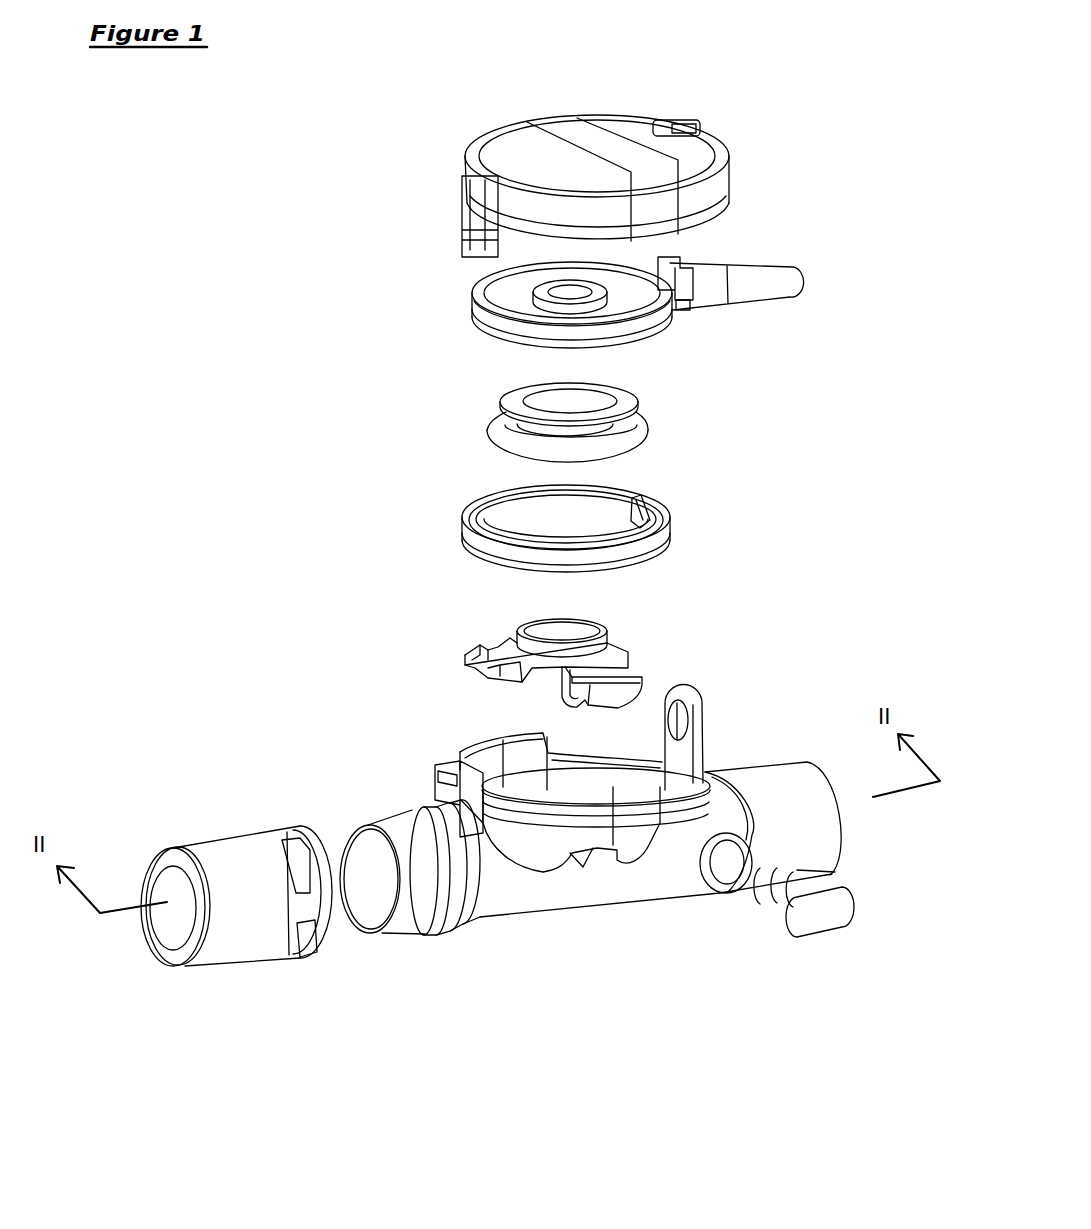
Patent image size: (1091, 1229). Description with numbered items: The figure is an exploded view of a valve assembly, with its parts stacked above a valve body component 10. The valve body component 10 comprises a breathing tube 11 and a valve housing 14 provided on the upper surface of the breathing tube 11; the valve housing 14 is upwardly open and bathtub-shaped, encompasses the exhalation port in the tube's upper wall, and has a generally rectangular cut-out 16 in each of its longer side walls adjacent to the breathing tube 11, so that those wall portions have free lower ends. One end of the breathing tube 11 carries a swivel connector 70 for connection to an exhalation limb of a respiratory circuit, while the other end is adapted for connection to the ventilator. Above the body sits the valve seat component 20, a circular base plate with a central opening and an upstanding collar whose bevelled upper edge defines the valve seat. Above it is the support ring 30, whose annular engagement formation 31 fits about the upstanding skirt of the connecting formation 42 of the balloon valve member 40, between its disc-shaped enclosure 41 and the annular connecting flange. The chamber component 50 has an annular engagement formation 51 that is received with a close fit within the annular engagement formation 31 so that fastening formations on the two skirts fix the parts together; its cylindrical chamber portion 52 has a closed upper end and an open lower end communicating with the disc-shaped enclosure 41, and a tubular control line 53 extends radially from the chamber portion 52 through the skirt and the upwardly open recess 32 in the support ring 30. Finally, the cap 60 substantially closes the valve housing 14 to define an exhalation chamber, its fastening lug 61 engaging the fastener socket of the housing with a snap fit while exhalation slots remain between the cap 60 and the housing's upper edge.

The valve body component 10 is at (648, 897).
The breathing tube 11 is at (407, 920).
The valve housing 14 is at (667, 837).
The cut-out 16 is at (600, 860).
The valve seat component 20 is at (680, 645).
The support ring 30 is at (541, 534).
The annular engagement formation 31 is at (645, 545).
The recess 32 is at (643, 510).
The balloon valve member 40 is at (537, 421).
The disc-shaped enclosure 41 is at (500, 433).
The connecting formation 42 is at (500, 398).
The chamber component 50 is at (590, 259).
The annular engagement formation 51 is at (500, 280).
The chamber portion 52 is at (585, 290).
The control line 53 is at (765, 275).
The cap 60 is at (661, 162).
The fastening lug 61 is at (467, 228).
The swivel connector 70 is at (232, 972).